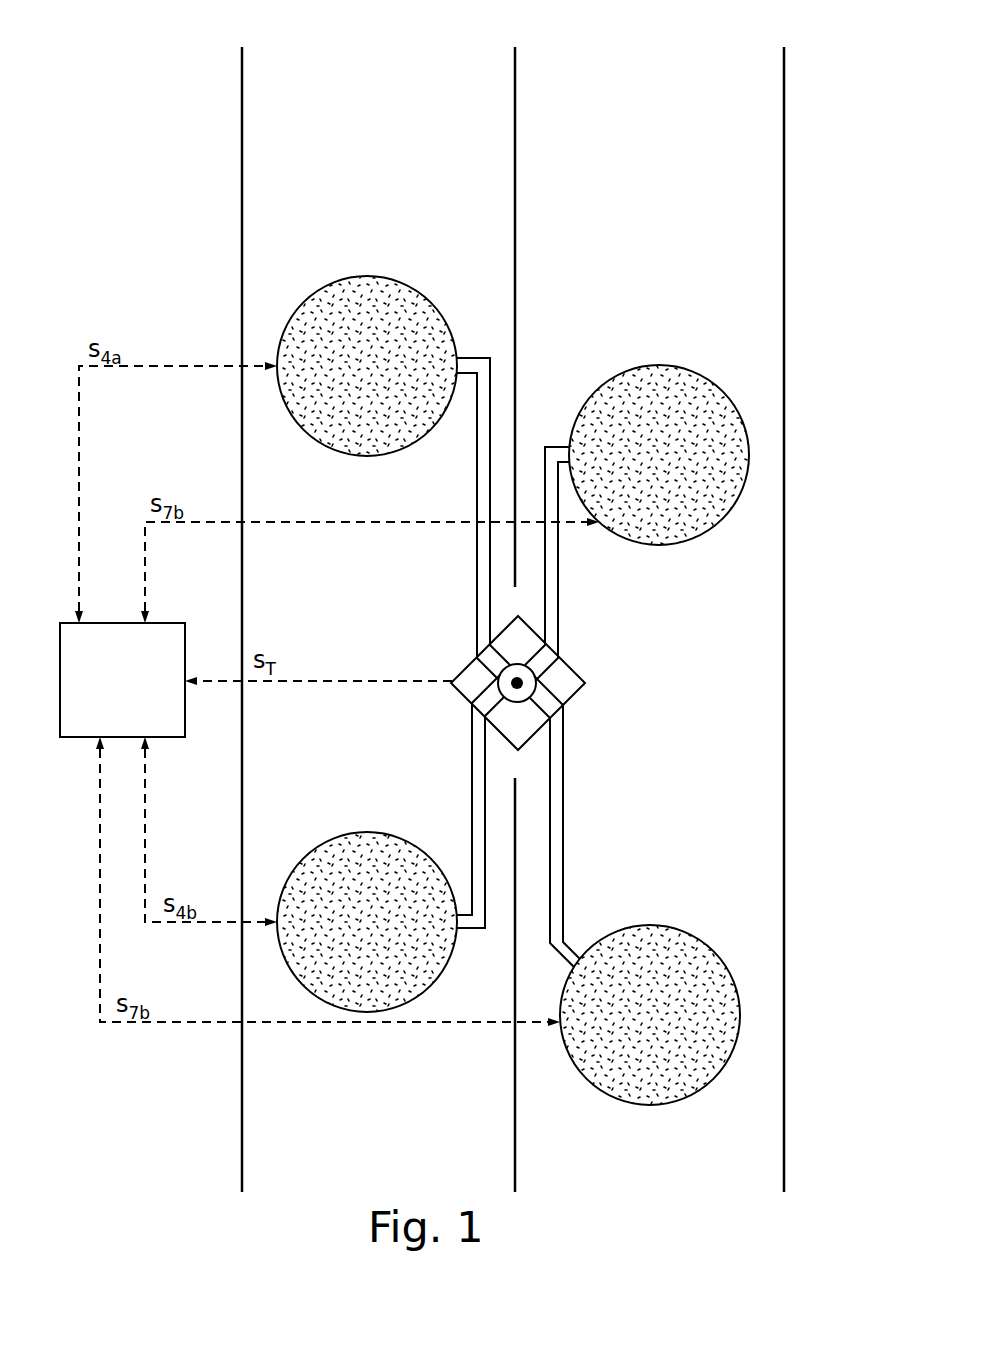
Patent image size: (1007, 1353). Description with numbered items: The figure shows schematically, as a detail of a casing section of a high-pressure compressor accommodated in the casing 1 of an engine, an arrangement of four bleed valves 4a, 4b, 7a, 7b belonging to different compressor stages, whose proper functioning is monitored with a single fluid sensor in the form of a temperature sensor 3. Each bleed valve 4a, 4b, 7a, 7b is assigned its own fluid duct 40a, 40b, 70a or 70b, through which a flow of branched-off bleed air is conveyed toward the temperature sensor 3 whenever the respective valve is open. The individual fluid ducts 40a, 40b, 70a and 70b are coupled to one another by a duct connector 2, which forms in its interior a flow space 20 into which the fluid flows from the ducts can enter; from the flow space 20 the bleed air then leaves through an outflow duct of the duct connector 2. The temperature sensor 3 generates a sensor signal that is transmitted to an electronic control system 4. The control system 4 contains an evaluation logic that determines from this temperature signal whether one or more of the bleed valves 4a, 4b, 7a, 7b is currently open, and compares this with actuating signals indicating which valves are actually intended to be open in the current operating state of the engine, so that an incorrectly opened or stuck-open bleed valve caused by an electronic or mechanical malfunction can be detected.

The casing 1 is at (712, 95).
The duct connector 2 is at (598, 679).
The temperature sensor 3 is at (524, 683).
The electronic control system 4 is at (122, 680).
The bleed valve 4a is at (362, 290).
The bleed valve 4b is at (361, 1018).
The bleed valve 7a is at (655, 380).
The bleed valve 7b is at (598, 1095).
The flow space 20 is at (499, 683).
The fluid duct 40a is at (477, 462).
The fluid duct 40b is at (472, 783).
The fluid duct 70a is at (548, 570).
The fluid duct 70b is at (565, 812).